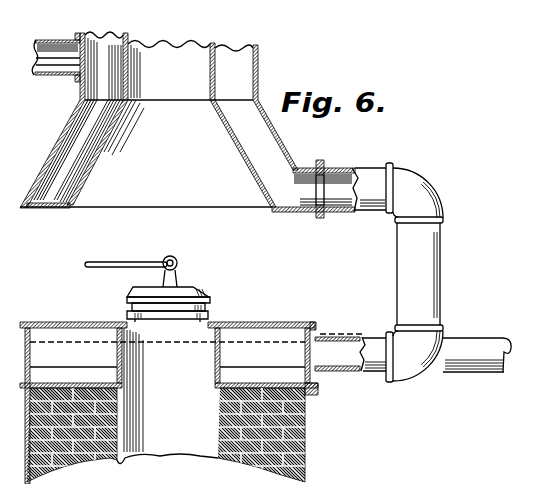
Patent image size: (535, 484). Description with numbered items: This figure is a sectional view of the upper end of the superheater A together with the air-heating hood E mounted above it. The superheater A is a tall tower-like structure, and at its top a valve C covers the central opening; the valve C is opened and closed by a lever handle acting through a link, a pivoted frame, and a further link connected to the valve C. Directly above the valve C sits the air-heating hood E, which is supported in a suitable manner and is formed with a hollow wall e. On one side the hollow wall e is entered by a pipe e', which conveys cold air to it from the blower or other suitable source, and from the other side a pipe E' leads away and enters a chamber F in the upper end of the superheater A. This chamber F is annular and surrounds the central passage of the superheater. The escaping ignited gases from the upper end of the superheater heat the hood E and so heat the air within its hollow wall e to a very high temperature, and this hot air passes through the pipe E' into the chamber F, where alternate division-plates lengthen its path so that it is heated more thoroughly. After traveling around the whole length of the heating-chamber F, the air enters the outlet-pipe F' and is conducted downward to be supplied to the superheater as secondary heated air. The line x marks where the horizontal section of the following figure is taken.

The air-heating hood E is at (159, 120).
The hollow wall e is at (329, 173).
The pipe e' is at (56, 74).
The pipe E' is at (431, 272).
The chamber F is at (160, 403).
The outlet-pipe F' is at (443, 339).
The section line x is at (345, 346).
The valve C is at (203, 290).
The superheater A is at (199, 436).